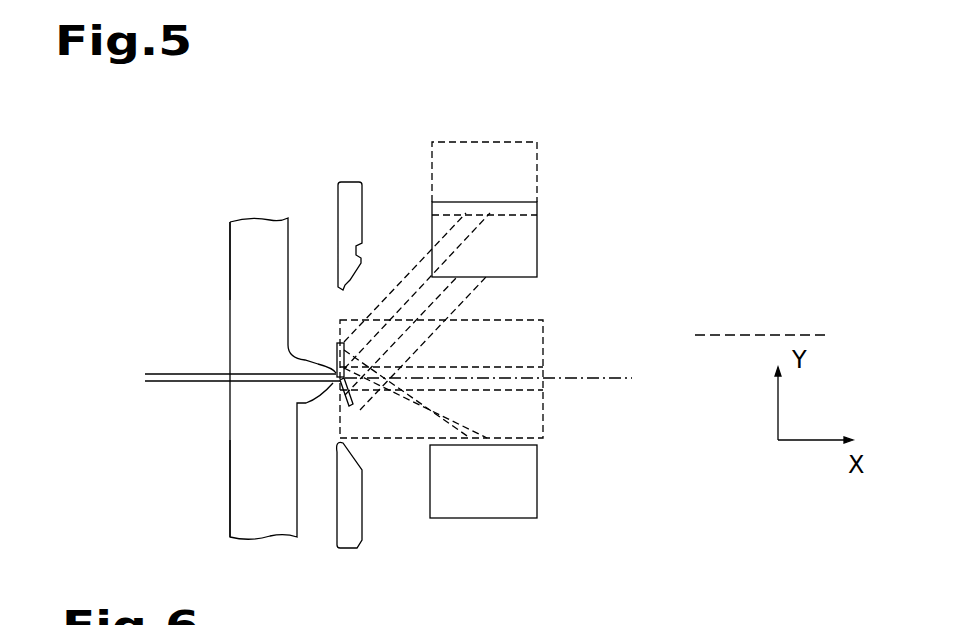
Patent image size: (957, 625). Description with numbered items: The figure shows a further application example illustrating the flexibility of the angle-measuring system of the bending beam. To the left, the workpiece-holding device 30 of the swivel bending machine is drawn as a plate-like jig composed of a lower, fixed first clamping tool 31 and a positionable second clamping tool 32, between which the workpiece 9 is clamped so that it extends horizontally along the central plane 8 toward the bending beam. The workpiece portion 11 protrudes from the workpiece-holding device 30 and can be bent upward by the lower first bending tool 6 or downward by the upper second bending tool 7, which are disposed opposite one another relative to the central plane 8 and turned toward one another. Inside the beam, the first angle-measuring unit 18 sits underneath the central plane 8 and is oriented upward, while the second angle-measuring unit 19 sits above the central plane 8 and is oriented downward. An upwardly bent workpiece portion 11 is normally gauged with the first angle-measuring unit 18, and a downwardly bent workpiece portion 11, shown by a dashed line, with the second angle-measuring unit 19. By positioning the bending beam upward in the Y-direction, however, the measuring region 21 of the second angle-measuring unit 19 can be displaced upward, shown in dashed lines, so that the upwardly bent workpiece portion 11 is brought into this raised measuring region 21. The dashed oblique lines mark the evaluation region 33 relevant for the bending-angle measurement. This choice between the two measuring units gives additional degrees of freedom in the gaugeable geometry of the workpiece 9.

The first bending tool 6 is at (350, 533).
The second bending tool 7 is at (352, 203).
The central plane 8 is at (628, 375).
The workpiece 9 is at (150, 375).
The workpiece portion 11 is at (334, 345).
The first angle-measuring unit 18 is at (540, 513).
The second angle-measuring unit 19 is at (447, 153).
The second measuring region 21 is at (547, 338).
The workpiece-holding device 30 is at (234, 205).
The first clamping tool 31 is at (227, 492).
The second clamping tool 32 is at (227, 228).
The evaluation region 33 is at (425, 263).